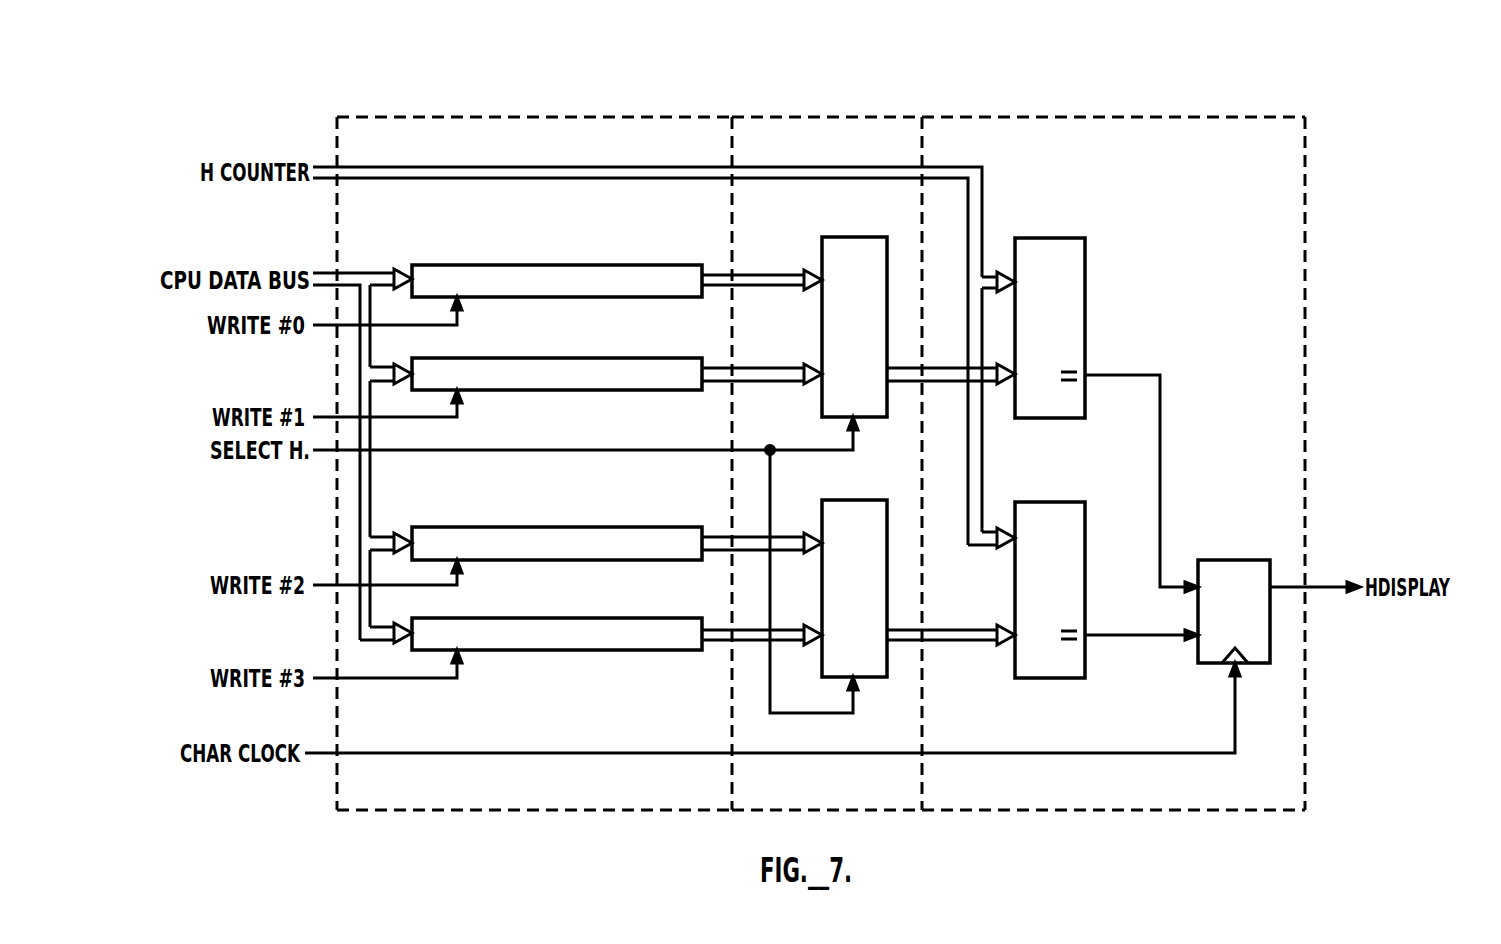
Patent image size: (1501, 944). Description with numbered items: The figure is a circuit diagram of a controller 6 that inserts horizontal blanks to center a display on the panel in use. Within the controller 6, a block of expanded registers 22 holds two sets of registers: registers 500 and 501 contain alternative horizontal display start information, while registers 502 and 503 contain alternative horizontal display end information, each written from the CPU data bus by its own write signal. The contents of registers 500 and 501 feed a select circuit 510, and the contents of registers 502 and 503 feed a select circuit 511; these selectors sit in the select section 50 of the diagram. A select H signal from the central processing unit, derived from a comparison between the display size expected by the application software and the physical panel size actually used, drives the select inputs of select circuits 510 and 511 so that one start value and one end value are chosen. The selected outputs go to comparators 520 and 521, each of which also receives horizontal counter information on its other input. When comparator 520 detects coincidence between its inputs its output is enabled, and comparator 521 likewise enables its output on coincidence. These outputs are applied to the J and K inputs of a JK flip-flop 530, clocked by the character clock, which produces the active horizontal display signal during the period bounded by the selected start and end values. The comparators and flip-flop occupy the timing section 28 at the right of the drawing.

The controller 6 is at (1076, 73).
The expanded registers 22 is at (728, 150).
The compensation select circuit 50 is at (911, 150).
The sync timing generator 28 is at (1289, 150).
The register 500 is at (625, 265).
The register 501 is at (632, 340).
The register 502 is at (622, 527).
The register 503 is at (622, 618).
The select circuit 510 is at (855, 237).
The select circuit 511 is at (853, 500).
The comparator 520 is at (1060, 238).
The comparator 521 is at (1060, 502).
The JK flip-flop 530 is at (1258, 543).